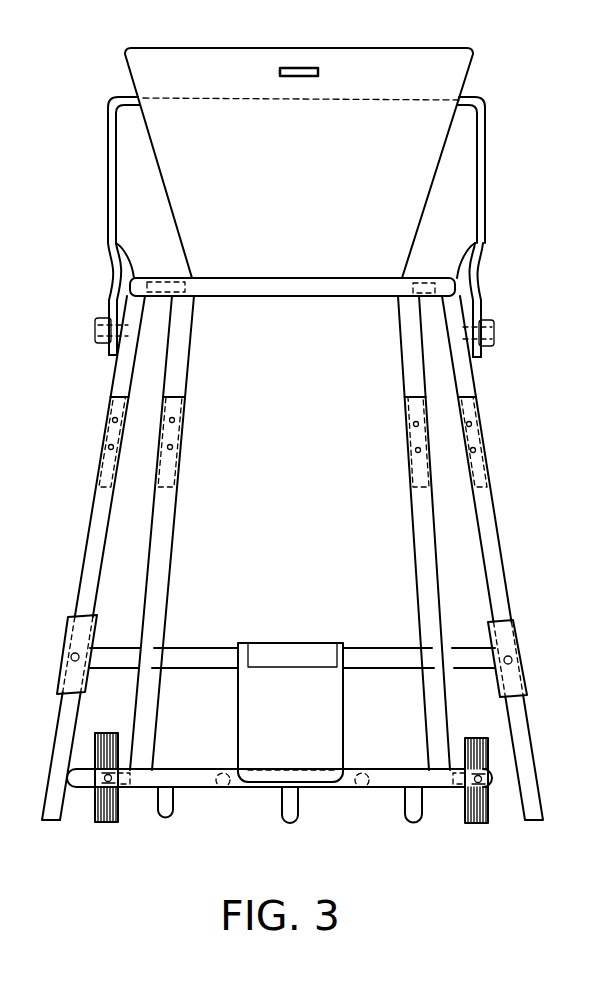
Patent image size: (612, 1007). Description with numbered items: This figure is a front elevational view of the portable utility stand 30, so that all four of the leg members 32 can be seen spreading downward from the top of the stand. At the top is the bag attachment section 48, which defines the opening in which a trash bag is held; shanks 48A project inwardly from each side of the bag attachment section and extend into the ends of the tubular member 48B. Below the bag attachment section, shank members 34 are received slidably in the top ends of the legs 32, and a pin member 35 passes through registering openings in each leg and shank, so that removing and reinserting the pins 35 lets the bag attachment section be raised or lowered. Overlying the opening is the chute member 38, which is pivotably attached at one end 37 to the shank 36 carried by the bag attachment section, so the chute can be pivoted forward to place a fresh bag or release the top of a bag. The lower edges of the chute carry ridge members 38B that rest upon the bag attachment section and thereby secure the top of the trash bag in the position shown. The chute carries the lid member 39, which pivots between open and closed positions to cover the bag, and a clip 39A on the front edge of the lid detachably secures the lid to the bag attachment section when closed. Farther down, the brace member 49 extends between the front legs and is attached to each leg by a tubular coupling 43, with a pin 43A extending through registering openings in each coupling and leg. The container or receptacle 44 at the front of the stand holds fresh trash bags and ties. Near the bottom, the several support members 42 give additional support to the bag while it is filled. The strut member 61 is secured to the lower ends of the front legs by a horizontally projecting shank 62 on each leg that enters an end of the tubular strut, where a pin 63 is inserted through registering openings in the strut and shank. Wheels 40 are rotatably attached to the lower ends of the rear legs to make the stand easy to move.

The portable utility stand 30 is at (52, 80).
The leg members 32 is at (88, 540).
The shank members 34 is at (171, 447).
The pin member 35 is at (173, 421).
The shank 36 is at (95, 330).
The end of chute 37 is at (107, 354).
The chute member 38 is at (485, 147).
The ridge members 38B is at (110, 244).
The lid member 39 is at (467, 65).
The clip 39A is at (298, 65).
The wheels 40 is at (110, 823).
The support members 42 is at (175, 808).
The tubular coupling 43 is at (66, 633).
The pin 43A is at (72, 659).
The container or receptacle 44 is at (342, 722).
The bag attachment section 48 is at (279, 302).
The shanks 48A is at (176, 294).
The tubular member 48B is at (334, 292).
The brace member 49 is at (212, 657).
The strut member 61 is at (157, 786).
The shank 62 is at (128, 790).
The pin 63 is at (100, 779).